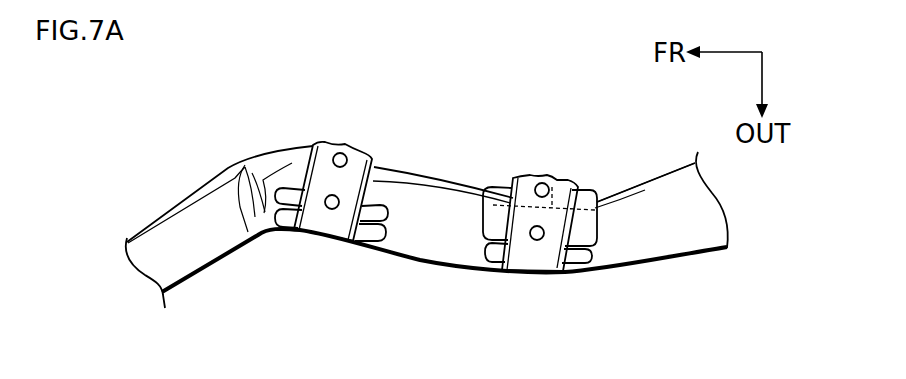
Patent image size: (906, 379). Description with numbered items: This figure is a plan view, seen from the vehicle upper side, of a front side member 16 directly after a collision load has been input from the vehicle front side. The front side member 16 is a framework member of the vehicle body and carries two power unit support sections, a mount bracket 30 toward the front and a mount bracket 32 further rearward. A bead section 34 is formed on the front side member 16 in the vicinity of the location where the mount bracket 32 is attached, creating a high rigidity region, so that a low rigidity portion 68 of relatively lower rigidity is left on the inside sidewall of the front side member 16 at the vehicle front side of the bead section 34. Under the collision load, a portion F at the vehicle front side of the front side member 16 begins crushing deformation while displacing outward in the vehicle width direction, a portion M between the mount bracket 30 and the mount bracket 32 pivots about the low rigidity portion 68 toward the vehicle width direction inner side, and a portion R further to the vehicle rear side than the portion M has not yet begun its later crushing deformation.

The front side member 16 is at (193, 150).
The mount bracket 30 is at (313, 145).
The mount bracket 32 is at (562, 180).
The bead section 34 is at (615, 193).
The low rigidity portion 68 is at (543, 170).
The portion F is at (198, 260).
The portion M is at (438, 230).
The portion R is at (668, 235).